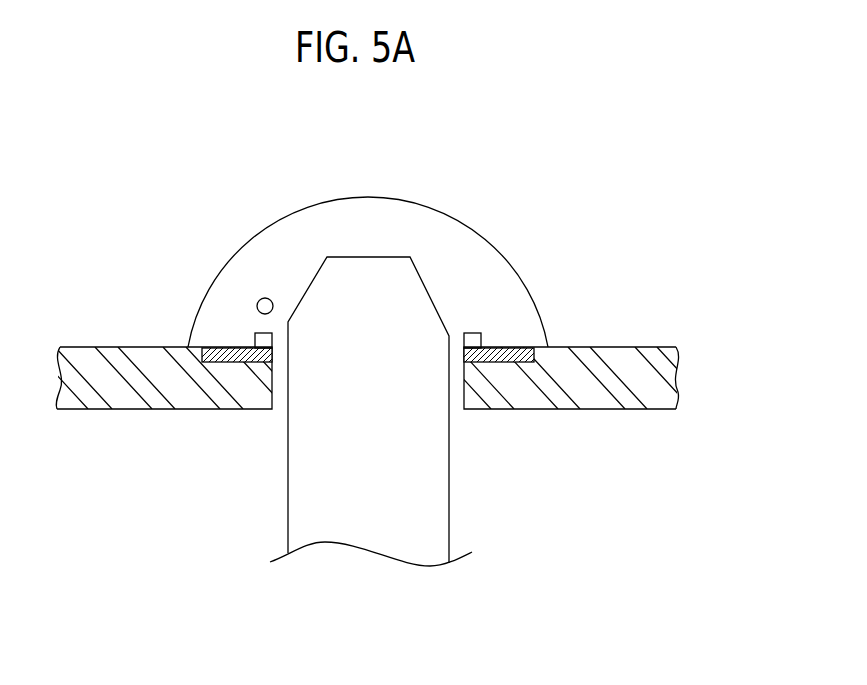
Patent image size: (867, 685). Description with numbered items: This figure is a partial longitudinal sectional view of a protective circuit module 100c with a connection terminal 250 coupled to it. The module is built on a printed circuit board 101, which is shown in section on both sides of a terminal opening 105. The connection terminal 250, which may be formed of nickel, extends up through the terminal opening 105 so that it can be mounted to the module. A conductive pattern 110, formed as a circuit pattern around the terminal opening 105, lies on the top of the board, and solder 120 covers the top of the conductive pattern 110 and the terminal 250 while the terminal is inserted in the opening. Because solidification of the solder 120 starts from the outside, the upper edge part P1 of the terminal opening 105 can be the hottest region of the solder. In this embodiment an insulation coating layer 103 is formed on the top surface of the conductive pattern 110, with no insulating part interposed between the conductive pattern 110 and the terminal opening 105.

The protective circuit module 100c is at (646, 313).
The printed circuit board 101 is at (125, 393).
The insulation coating layer 103 is at (257, 341).
The terminal opening 105 is at (464, 379).
The conductive pattern 110 is at (213, 347).
The solder 120 is at (457, 238).
The connection terminal 250 is at (362, 533).
The upper edge part P1 is at (262, 297).